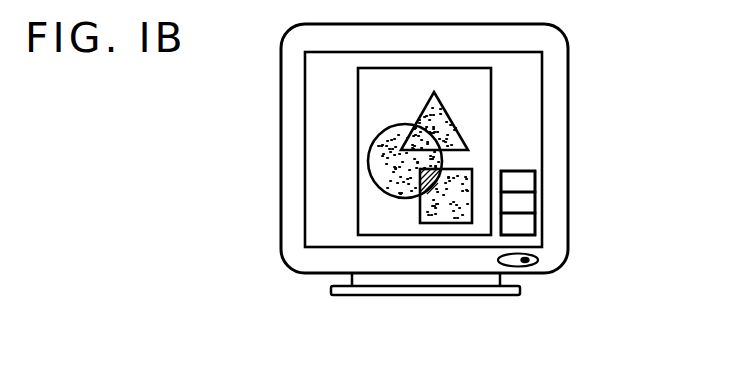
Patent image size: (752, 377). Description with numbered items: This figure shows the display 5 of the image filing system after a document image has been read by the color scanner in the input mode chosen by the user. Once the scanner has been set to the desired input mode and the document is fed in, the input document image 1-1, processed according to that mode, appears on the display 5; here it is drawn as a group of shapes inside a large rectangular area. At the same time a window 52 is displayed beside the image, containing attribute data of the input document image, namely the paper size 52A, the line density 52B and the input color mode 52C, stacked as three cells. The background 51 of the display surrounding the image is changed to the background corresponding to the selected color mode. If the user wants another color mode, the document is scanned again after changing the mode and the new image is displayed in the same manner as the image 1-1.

The display 5 is at (568, 50).
The background 51 is at (320, 97).
The input document image 1-1 is at (491, 105).
The window 52 is at (518, 171).
The paper size 52A is at (535, 181).
The line density 52B is at (535, 202).
The input color mode 52C is at (535, 225).